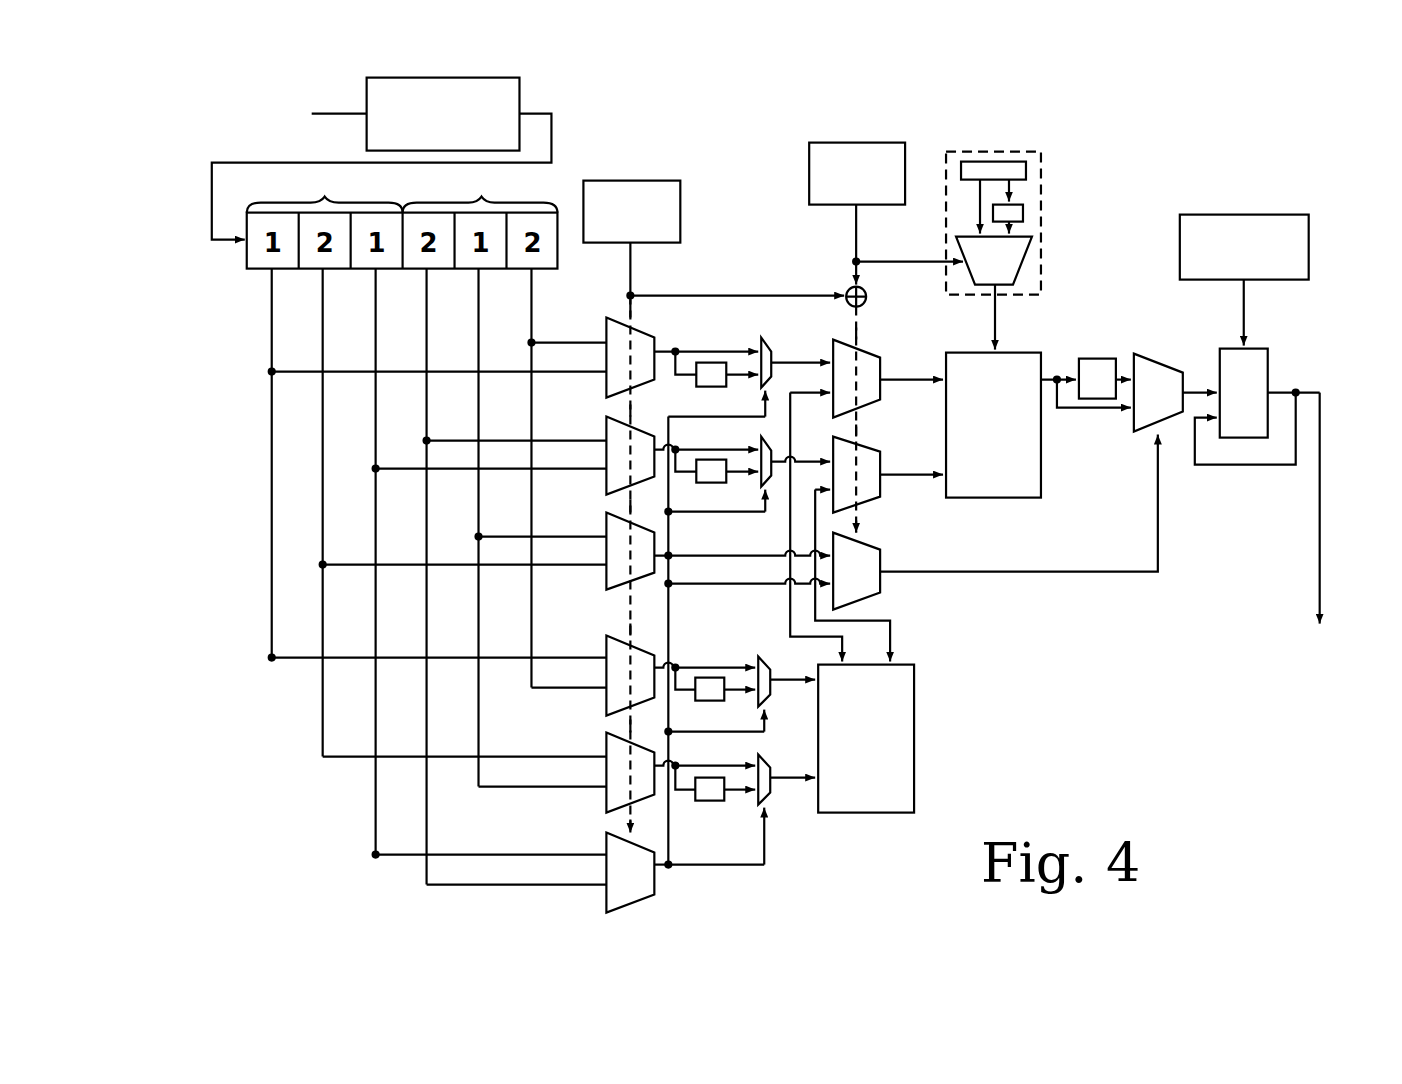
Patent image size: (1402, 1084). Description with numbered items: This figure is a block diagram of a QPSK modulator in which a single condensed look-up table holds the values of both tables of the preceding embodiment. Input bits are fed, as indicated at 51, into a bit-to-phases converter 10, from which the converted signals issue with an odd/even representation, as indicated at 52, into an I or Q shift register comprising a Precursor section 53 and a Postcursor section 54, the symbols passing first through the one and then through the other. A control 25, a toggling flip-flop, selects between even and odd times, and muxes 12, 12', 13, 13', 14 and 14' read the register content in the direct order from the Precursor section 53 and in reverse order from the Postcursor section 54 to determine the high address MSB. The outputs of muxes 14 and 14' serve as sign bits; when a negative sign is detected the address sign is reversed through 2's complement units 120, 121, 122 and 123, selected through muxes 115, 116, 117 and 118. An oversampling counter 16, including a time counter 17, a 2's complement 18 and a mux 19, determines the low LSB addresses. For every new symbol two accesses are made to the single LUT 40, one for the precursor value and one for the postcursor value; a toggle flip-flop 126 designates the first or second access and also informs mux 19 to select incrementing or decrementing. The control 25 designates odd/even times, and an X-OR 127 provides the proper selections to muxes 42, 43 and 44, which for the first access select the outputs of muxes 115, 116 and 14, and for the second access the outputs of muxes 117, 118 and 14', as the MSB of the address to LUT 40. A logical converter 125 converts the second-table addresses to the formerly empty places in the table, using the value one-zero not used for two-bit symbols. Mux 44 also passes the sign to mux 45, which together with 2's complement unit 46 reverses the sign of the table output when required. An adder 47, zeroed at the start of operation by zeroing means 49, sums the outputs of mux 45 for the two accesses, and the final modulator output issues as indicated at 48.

The bit-to-phases converter 10 is at (402, 110).
The bit input 51 is at (322, 113).
The odd/even representation output 52 is at (553, 138).
The Precursor section 53 is at (325, 197).
The Postcursor section 54 is at (483, 197).
The control 25 is at (645, 195).
The mux 12 is at (433, 365).
The mux 13 is at (433, 462).
The mux 14 is at (433, 558).
The mux 12' is at (432, 680).
The mux 13' is at (432, 777).
The mux 14' is at (432, 871).
The mux 115 is at (790, 345).
The mux 116 is at (765, 440).
The mux 117 is at (773, 665).
The mux 118 is at (770, 746).
The 2's complement unit 120 is at (718, 370).
The 2's complement unit 121 is at (713, 477).
The 2's complement unit 122 is at (712, 695).
The 2's complement unit 123 is at (707, 792).
The logical converter 125 is at (883, 733).
The toggle flip-flop 126 is at (823, 185).
The X-OR 127 is at (851, 290).
The oversampling counter 16 is at (1034, 231).
The time counter 17 is at (997, 173).
The 2's complement 18 is at (1020, 211).
The mux 19 is at (1007, 257).
The mux 42 is at (870, 373).
The mux 43 is at (873, 468).
The mux 44 is at (865, 573).
The LUT 40 is at (1007, 483).
The 2's complement unit 46 is at (1100, 367).
The mux 45 is at (1158, 373).
The adder 47 is at (1260, 365).
The zeroing means 49 is at (1243, 229).
The final output 48 is at (1322, 550).